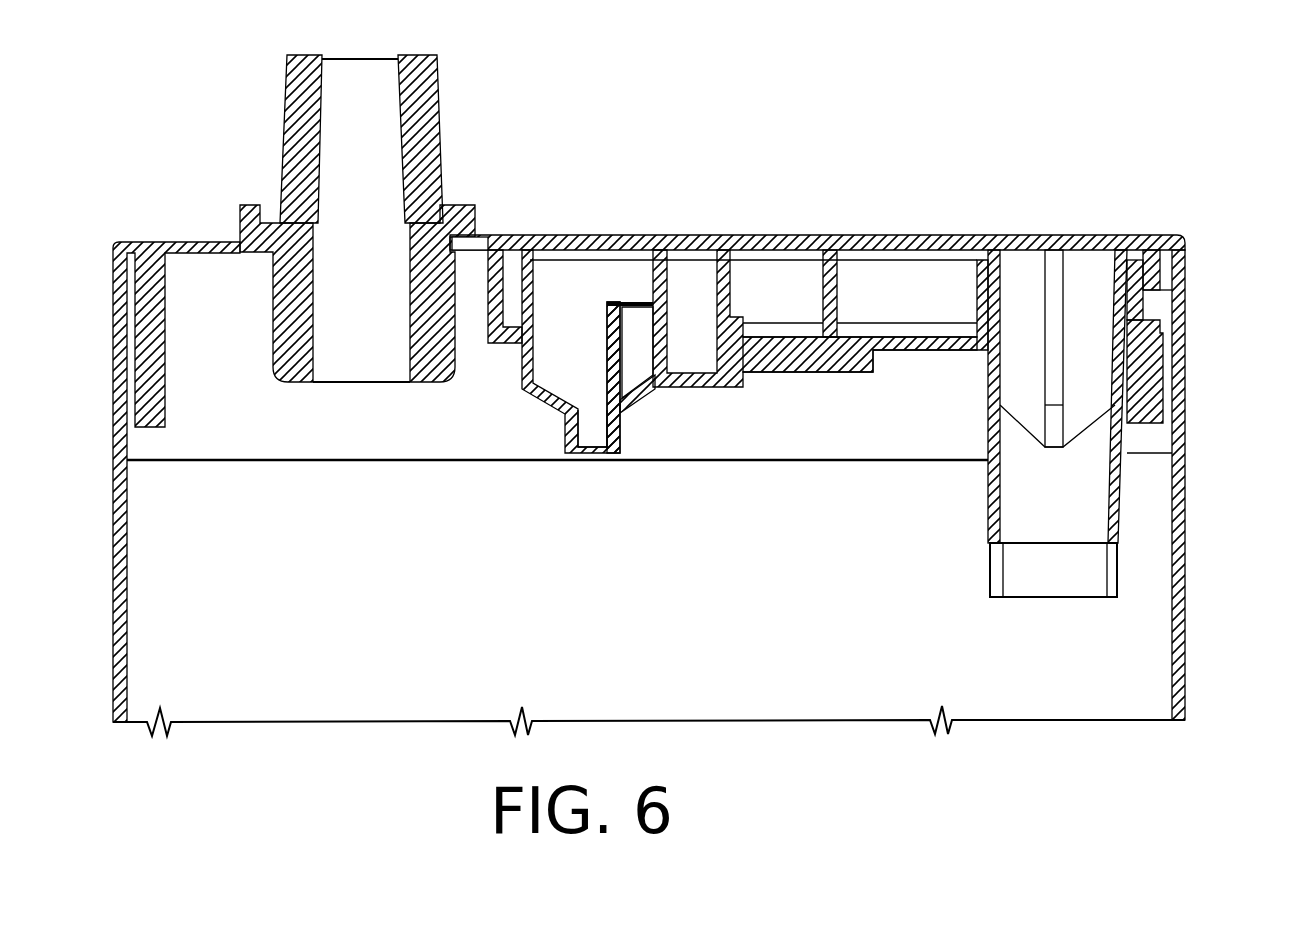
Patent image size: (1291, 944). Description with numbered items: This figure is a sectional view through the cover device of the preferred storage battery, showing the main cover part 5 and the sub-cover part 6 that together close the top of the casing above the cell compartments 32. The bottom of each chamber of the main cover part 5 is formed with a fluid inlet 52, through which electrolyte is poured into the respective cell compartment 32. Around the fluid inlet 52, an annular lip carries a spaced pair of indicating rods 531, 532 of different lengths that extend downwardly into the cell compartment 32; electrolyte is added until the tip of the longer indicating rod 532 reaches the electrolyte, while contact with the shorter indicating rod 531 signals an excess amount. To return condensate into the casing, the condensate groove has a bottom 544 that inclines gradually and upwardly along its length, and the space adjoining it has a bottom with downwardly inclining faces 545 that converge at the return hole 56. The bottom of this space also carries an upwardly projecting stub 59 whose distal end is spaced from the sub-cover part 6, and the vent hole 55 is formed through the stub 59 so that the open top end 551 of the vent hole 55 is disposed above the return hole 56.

The main cover part 5 is at (1185, 359).
The sub-cover part 6 is at (1150, 247).
The cell compartments 32 is at (1160, 612).
The fluid inlet 52 is at (1092, 306).
The shorter indicating rod 531 is at (1120, 483).
The longer indicating rod 532 is at (1113, 557).
The bottom of condensate groove 544 is at (782, 330).
The downwardly inclining faces 545 is at (540, 393).
The vent hole 55 is at (637, 385).
The open top end of vent hole 551 is at (633, 310).
The return hole 56 is at (595, 430).
The stub 59 is at (605, 302).